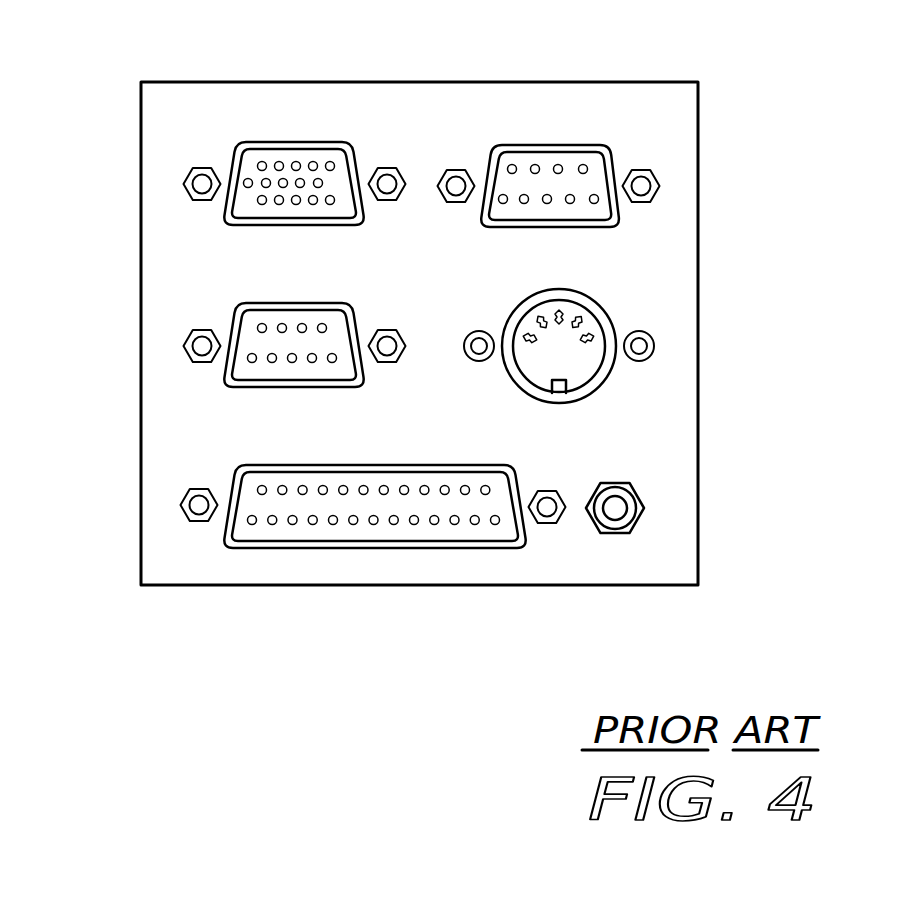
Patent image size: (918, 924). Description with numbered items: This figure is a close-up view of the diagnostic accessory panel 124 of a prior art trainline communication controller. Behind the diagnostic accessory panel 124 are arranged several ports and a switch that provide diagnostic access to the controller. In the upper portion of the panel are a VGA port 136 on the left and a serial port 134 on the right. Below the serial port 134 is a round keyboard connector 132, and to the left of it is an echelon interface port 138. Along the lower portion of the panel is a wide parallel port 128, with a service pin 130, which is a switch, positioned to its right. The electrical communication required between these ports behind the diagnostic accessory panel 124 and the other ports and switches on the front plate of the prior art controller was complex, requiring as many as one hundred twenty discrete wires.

The diagnostic accessory panel 124 is at (595, 558).
The parallel port 128 is at (341, 558).
The service pin 130 is at (654, 477).
The keyboard connector 132 is at (624, 305).
The RS-232 port 134 is at (573, 133).
The VGA port 136 is at (331, 136).
The echelon interface port 138 is at (220, 393).